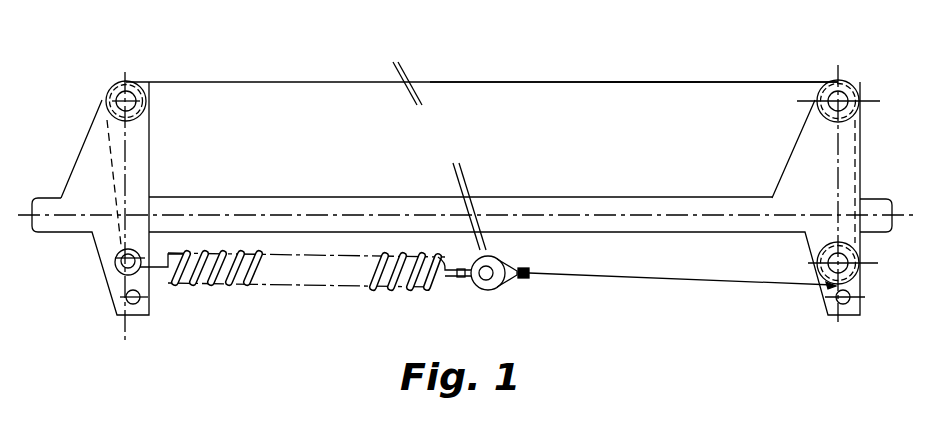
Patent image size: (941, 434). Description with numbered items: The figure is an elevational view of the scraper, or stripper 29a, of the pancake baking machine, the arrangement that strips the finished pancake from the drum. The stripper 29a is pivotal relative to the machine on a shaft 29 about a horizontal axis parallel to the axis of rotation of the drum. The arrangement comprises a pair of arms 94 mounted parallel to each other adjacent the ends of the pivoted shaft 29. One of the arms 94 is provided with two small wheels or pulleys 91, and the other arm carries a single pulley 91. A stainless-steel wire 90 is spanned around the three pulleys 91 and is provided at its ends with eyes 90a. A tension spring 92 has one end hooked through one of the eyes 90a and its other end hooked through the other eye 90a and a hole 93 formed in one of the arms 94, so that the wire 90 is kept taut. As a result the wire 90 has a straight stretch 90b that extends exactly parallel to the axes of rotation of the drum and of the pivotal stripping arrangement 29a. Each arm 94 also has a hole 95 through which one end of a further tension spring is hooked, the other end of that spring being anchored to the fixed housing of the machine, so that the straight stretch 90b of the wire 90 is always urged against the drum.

The shaft 29 is at (575, 229).
The stripper 29a is at (704, 66).
The stainless-steel wire 90 is at (291, 76).
The eyes 90a is at (118, 239).
The straight stretch 90b is at (519, 81).
The pulleys 91 is at (142, 88).
The tension spring 92 is at (333, 275).
The hole 93 is at (117, 267).
The arms 94 is at (88, 163).
The hole 95 is at (133, 317).